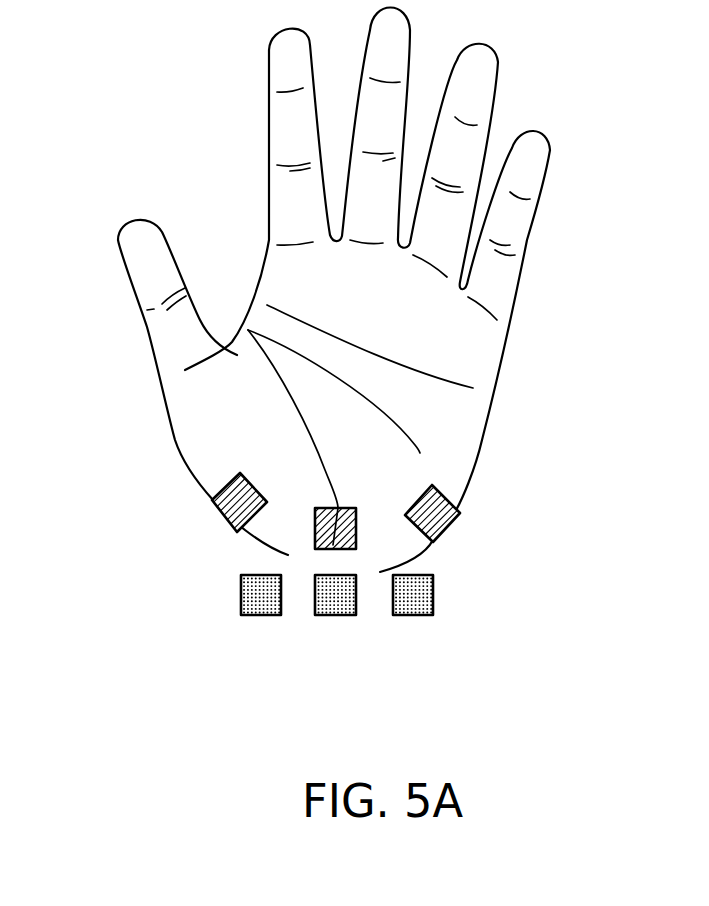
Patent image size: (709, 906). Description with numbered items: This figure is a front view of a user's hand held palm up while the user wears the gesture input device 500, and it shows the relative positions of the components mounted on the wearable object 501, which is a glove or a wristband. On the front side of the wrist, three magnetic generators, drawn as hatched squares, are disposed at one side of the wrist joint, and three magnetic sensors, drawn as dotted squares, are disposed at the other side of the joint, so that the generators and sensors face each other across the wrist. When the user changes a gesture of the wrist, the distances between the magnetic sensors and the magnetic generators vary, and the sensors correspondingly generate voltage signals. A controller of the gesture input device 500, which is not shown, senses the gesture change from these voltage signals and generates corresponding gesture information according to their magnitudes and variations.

The gesture input device 500 is at (656, 733).
The wearable object 501 is at (484, 440).